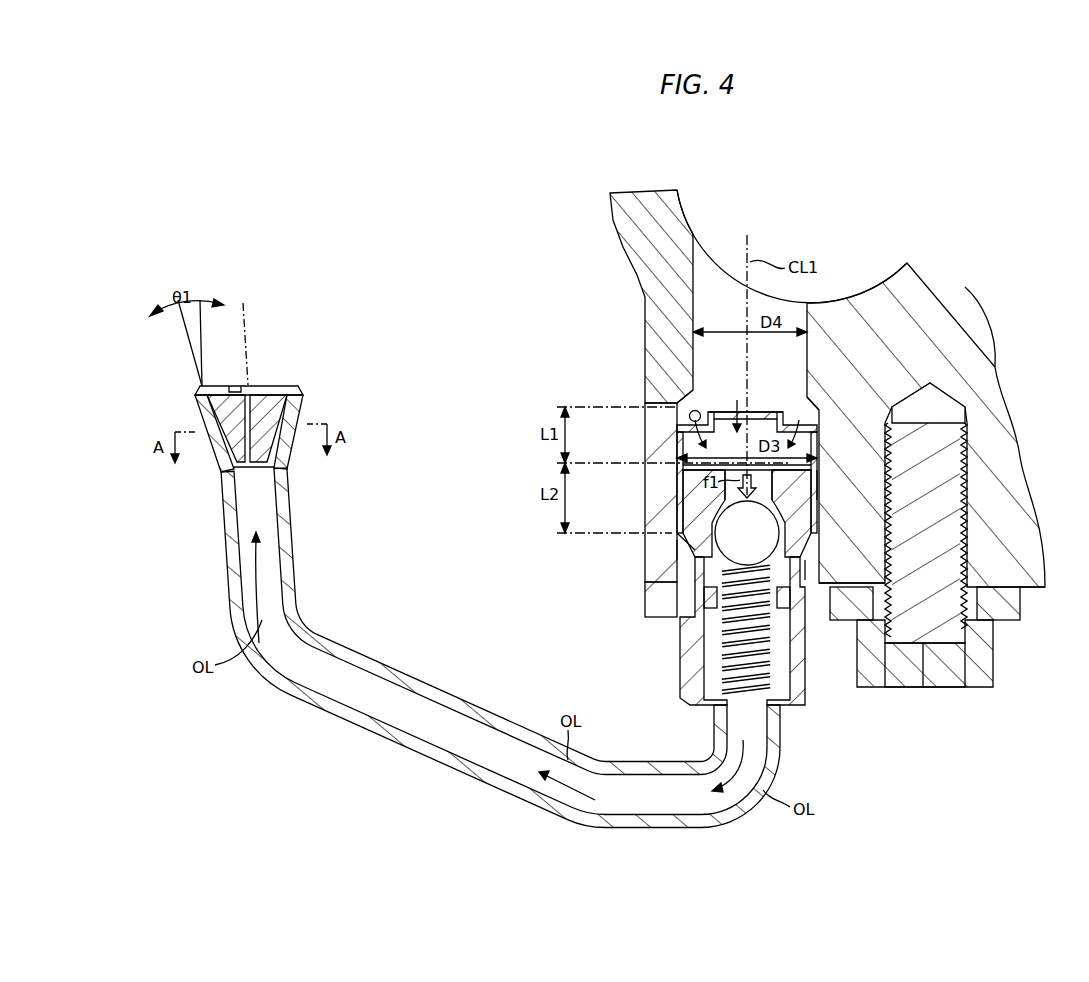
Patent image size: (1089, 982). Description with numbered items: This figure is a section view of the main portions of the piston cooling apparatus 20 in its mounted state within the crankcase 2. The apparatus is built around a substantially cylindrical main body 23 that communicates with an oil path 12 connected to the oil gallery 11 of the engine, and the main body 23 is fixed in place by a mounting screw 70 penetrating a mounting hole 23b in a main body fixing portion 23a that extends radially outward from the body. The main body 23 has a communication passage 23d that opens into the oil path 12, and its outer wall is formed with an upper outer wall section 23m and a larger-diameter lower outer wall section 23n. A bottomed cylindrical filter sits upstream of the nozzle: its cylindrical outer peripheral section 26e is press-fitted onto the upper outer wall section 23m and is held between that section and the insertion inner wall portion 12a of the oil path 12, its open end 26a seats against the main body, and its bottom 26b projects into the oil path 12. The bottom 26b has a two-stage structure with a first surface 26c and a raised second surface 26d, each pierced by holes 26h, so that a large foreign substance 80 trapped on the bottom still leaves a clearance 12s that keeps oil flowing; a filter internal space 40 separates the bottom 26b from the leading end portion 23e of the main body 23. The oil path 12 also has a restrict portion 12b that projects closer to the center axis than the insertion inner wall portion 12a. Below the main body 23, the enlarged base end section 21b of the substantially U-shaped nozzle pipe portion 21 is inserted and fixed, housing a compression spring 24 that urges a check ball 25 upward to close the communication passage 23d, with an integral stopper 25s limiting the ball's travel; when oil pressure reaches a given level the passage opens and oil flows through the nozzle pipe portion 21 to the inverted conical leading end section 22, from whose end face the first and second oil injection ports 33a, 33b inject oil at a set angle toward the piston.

The crankcase 2 is at (1045, 573).
The oil gallery 11 is at (810, 242).
The oil path 12 is at (712, 290).
The insertion inner wall portion 12a is at (828, 413).
The restrict portion 12b is at (965, 307).
The clearance 12s is at (676, 427).
The piston cooling apparatus 20 is at (479, 564).
The nozzle pipe portion 21 is at (449, 690).
The base end section 21b is at (688, 665).
The leading end section 22 is at (291, 450).
The main body 23 is at (686, 503).
The main body fixing portion 23a is at (997, 587).
The mounting hole 23b is at (873, 603).
The communication passage 23d is at (762, 497).
The leading end portion 23e is at (813, 458).
The upper outer wall section 23m is at (819, 497).
The lower outer wall section 23n is at (820, 560).
The compression spring 24 is at (721, 632).
The check ball 25 is at (732, 520).
The stopper 25s is at (712, 598).
The open end 26a is at (677, 535).
The bottom 26b is at (781, 368).
The first surface 26c is at (791, 410).
The second surface 26d is at (753, 410).
The outer peripheral section 26e is at (819, 469).
The holes 26h is at (742, 400).
The first oil injection port 33a is at (212, 385).
The second oil injection port 33b is at (250, 393).
The filter internal space 40 is at (690, 412).
The mounting screw 70 is at (973, 688).
The foreign substance 80 is at (727, 395).